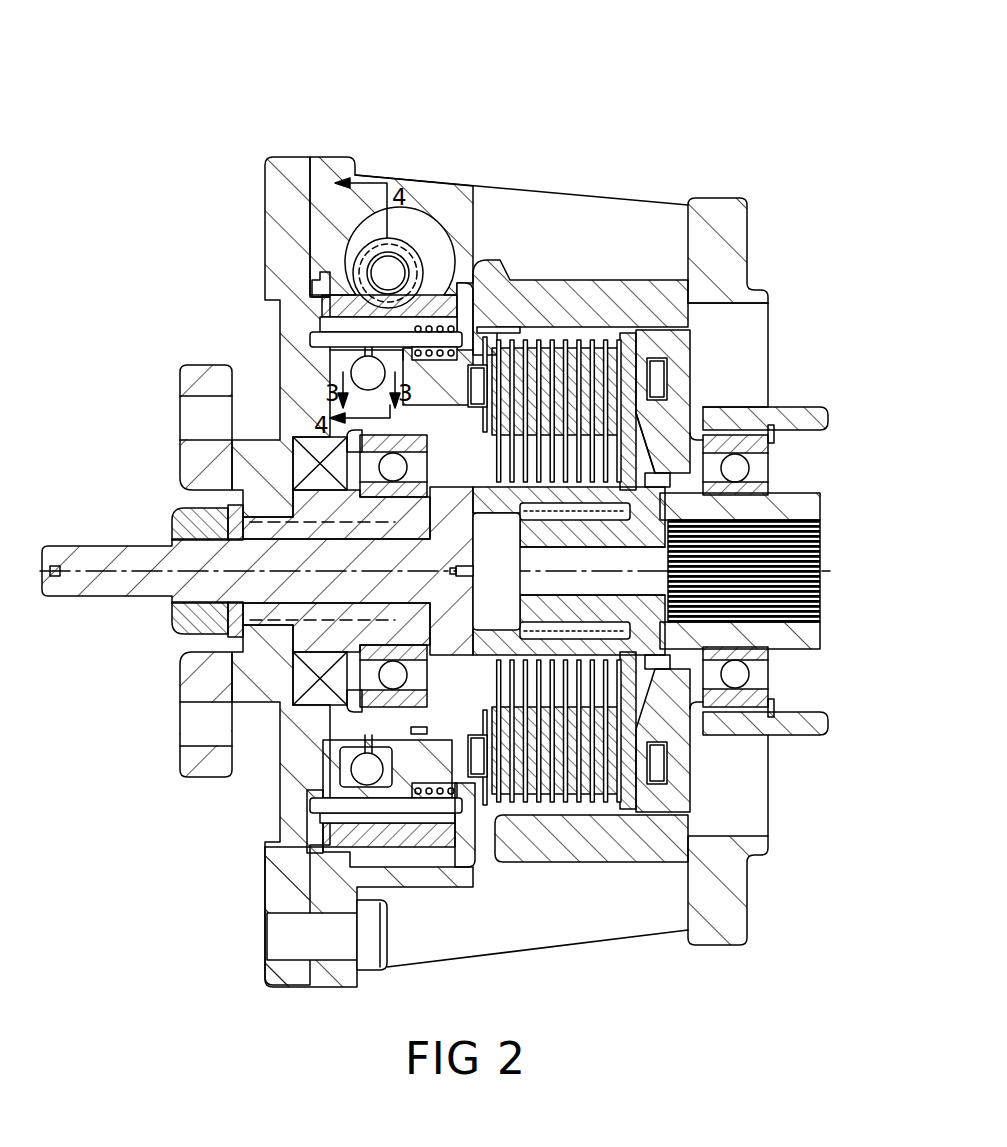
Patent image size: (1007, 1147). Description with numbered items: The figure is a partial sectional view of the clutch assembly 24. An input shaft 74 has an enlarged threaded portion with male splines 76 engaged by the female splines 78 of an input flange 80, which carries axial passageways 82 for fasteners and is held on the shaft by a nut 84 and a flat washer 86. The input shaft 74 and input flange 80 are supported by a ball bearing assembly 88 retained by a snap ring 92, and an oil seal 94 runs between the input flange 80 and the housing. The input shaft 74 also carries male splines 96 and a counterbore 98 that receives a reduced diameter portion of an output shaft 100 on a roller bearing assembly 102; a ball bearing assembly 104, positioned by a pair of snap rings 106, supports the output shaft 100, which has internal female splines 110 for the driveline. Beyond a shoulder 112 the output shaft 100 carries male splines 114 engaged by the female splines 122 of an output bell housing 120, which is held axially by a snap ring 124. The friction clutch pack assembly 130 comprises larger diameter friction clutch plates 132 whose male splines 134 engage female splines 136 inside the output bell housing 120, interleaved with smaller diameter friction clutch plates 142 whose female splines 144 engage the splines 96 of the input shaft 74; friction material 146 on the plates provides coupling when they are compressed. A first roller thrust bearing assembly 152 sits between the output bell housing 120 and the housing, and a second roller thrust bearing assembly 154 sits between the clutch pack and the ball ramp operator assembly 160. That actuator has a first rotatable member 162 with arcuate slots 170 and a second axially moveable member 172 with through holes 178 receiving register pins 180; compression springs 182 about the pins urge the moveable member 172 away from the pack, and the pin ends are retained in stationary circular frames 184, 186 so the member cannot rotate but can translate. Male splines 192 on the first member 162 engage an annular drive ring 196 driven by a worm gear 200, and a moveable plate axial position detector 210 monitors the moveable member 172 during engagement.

The clutch assembly 24 is at (557, 114).
The input shaft 74 is at (88, 580).
The male splines 76 is at (200, 522).
The female splines 78 is at (259, 490).
The input flange 80 is at (180, 362).
The axial passageways 82 is at (193, 693).
The nut 84 is at (197, 620).
The flat washer 86 is at (217, 630).
The ball bearing assembly 88 is at (300, 680).
The snap ring 92 is at (300, 735).
The oil seal 94 is at (298, 692).
The male splines 96 is at (441, 482).
The counterbore 98 is at (508, 614).
The output shaft 100 is at (783, 642).
The roller bearing assembly 102 is at (587, 513).
The ball bearing assembly 104 is at (765, 465).
The snap rings 106 is at (770, 705).
The female splines 110 is at (772, 522).
The shoulder 112 is at (707, 433).
The male splines 114 is at (657, 542).
The output bell housing 120 is at (657, 360).
The female splines 122 is at (660, 445).
The snap ring 124 is at (647, 633).
The friction clutch pack assembly 130 is at (651, 187).
The larger diameter friction clutch plates 132 is at (548, 345).
The male splines 134 is at (585, 345).
The female splines 136 is at (572, 345).
The smaller diameter friction clutch plates 142 is at (665, 445).
The female splines 144 is at (683, 460).
The friction material 146 is at (508, 345).
The first roller thrust bearing assembly 152 is at (685, 292).
The second roller thrust bearing assembly 154 is at (479, 290).
The ball ramp operator assembly 160 is at (295, 155).
The first rotatable member 162 is at (330, 345).
The arcuate slots 170 is at (318, 820).
The second axially moveable member 172 is at (474, 740).
The through holes 178 is at (393, 810).
The register pins 180 is at (433, 345).
The compression springs 182 is at (472, 848).
The stationary circular frame 184 is at (307, 848).
The stationary circular frame 186 is at (478, 855).
The male splines 192 is at (345, 306).
The annular drive ring 196 is at (318, 288).
The worm gear 200 is at (352, 262).
The moveable plate axial position detector 210 is at (411, 731).